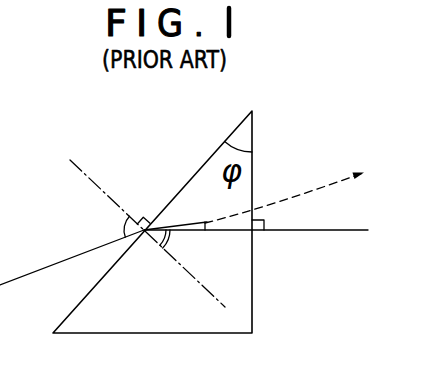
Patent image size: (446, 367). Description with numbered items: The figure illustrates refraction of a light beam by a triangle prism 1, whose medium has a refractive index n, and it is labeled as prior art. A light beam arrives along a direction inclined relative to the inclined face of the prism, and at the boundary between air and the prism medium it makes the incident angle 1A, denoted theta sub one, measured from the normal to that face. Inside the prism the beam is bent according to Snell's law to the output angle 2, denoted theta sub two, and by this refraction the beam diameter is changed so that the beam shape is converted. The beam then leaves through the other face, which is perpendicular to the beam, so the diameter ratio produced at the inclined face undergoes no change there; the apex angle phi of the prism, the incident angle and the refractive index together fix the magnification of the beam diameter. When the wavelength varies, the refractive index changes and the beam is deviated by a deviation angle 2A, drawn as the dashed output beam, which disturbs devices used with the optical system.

The prism (refractive index n) 1 is at (186, 186).
The incident angle θ1 1A is at (112, 223).
The refraction angle θ 2 is at (183, 251).
The deviation angle Δθ2 2A is at (207, 226).